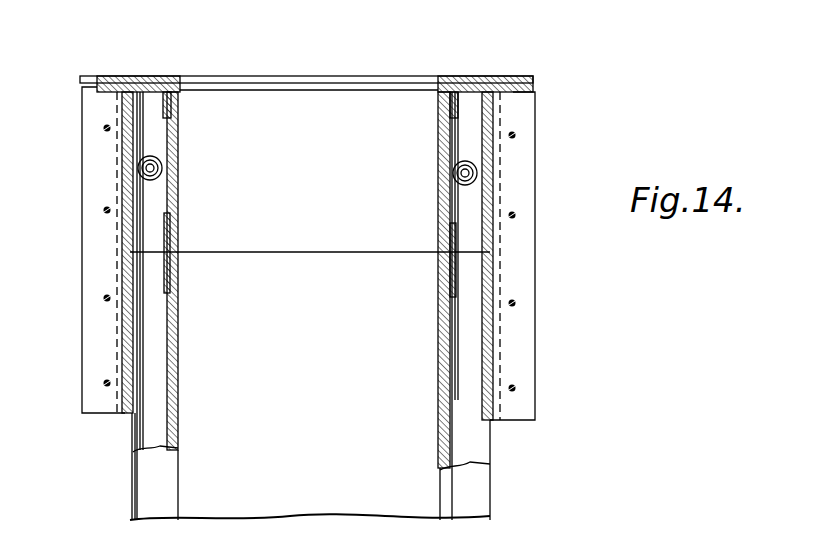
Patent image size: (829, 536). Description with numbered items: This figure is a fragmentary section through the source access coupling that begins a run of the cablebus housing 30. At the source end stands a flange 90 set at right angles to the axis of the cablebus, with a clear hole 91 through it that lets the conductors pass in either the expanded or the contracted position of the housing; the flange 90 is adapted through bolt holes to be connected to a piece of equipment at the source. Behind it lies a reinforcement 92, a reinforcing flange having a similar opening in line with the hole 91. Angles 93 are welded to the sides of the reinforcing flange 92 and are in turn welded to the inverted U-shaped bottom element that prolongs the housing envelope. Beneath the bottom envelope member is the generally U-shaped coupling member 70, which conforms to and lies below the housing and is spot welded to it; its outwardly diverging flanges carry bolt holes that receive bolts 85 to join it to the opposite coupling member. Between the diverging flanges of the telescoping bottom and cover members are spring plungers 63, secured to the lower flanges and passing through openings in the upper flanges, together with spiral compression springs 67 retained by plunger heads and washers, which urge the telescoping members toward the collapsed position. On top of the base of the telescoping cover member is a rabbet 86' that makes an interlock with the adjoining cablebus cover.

The clear hole 91 is at (272, 80).
The flange 90 is at (500, 76).
The reinforcement 92 is at (107, 92).
The angles 93 is at (172, 116).
The spiral compression springs 67 is at (125, 152).
The spring plungers 63 is at (140, 168).
The rabbet 86' is at (310, 247).
The U-shaped member 70 is at (518, 165).
The bolts 85 is at (516, 304).
The cablebus housing 30 is at (310, 386).